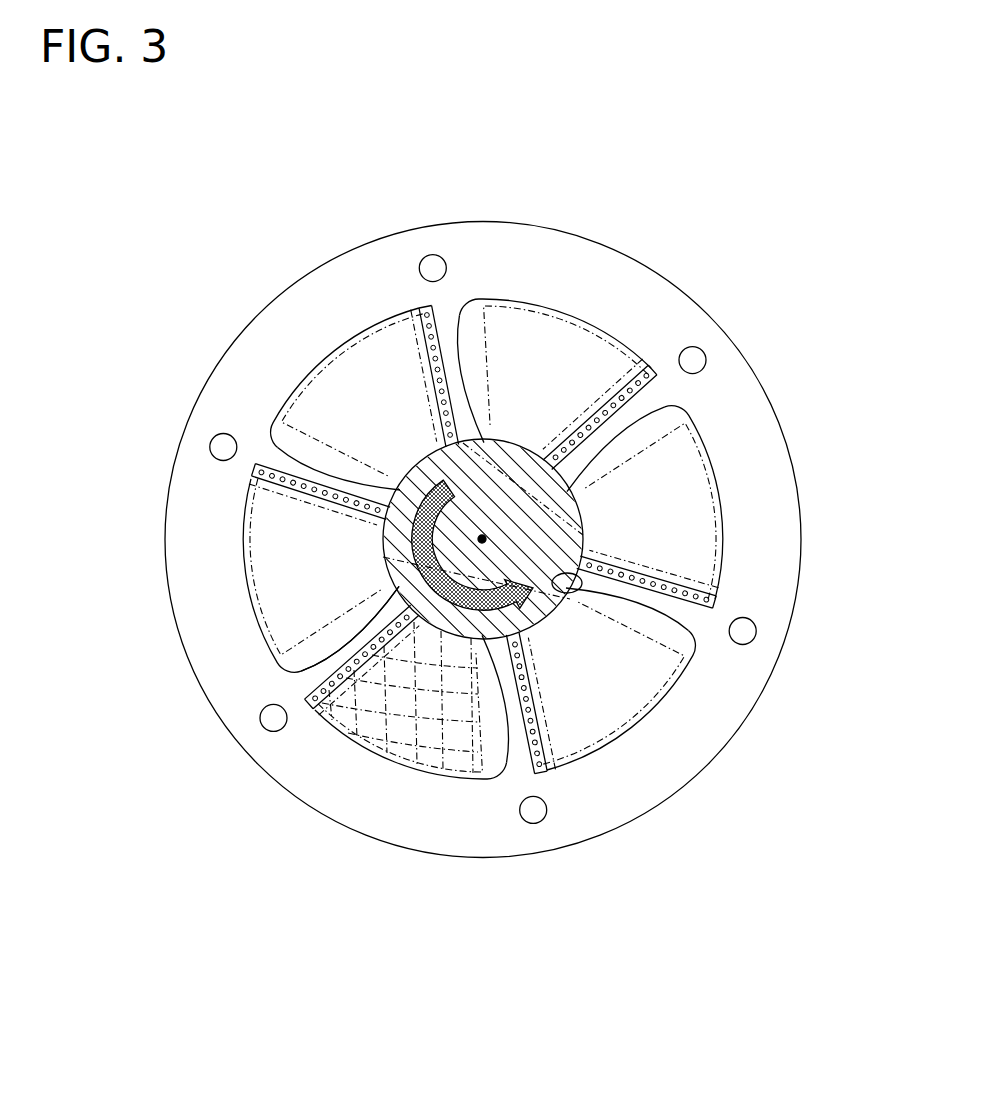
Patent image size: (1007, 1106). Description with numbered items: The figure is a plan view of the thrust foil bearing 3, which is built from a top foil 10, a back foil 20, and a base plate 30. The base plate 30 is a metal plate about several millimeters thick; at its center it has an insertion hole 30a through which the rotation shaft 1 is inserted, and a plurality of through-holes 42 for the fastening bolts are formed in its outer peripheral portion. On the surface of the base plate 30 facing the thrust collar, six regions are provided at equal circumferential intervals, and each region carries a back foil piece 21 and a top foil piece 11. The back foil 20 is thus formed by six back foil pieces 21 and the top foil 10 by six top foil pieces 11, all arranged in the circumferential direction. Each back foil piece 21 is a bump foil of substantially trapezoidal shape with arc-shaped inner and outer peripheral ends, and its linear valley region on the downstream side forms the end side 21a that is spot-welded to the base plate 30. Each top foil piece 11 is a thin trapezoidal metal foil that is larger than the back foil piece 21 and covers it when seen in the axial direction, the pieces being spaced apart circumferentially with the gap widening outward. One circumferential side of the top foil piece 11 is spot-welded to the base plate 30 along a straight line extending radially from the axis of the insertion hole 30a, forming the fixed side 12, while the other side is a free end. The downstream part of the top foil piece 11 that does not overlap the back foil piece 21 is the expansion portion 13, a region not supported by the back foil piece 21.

The rotation shaft 1 is at (400, 473).
The thrust foil bearing 3 is at (640, 235).
The top foil 10 is at (525, 552).
The top foil piece 11 is at (630, 350).
The fixed side 12 is at (325, 668).
The expansion portion 13 is at (453, 330).
The back foil 20 is at (382, 768).
The back foil piece 21 is at (546, 302).
The end side 21a is at (488, 760).
The base plate 30 is at (513, 222).
The insertion hole 30a is at (573, 584).
The through-hole 42 is at (436, 257).